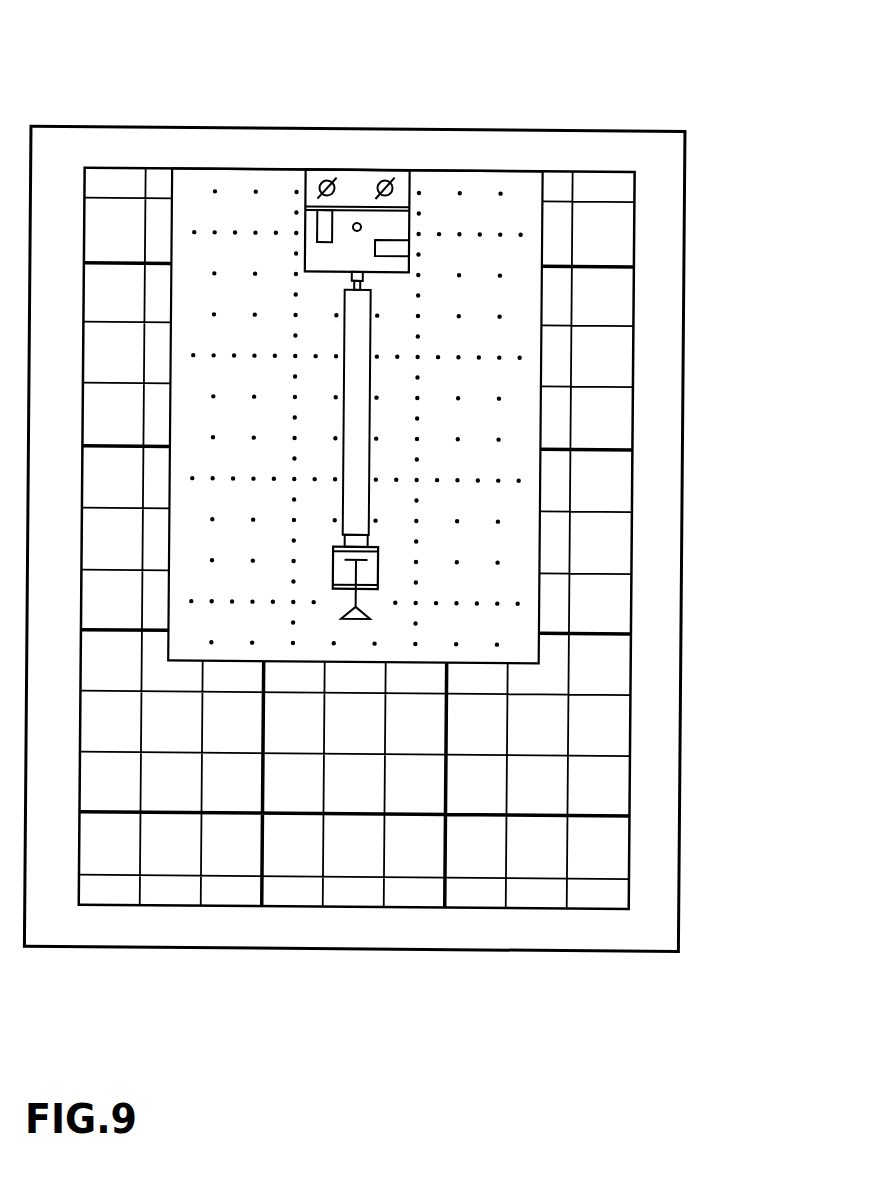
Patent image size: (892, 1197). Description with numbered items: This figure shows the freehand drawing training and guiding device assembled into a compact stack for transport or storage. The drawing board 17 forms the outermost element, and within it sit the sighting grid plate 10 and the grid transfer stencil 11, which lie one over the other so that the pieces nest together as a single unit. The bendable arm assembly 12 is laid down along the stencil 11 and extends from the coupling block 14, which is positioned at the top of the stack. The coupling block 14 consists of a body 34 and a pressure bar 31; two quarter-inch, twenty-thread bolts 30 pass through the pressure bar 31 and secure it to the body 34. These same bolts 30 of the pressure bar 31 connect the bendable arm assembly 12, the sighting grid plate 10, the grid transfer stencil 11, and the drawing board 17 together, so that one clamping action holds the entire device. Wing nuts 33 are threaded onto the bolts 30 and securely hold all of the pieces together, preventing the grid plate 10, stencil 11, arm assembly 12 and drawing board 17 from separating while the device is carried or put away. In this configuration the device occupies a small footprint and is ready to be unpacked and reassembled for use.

The sighting grid plate 10 is at (600, 547).
The grid transfer stencil 11 is at (500, 588).
The bendable arm assembly 12 is at (373, 412).
The coupling block 14 is at (416, 227).
The drawing board 17 is at (652, 681).
The bolt 30 is at (328, 176).
The pressure bar 31 is at (350, 180).
The wing nut 33 is at (389, 176).
The body 34 is at (300, 247).